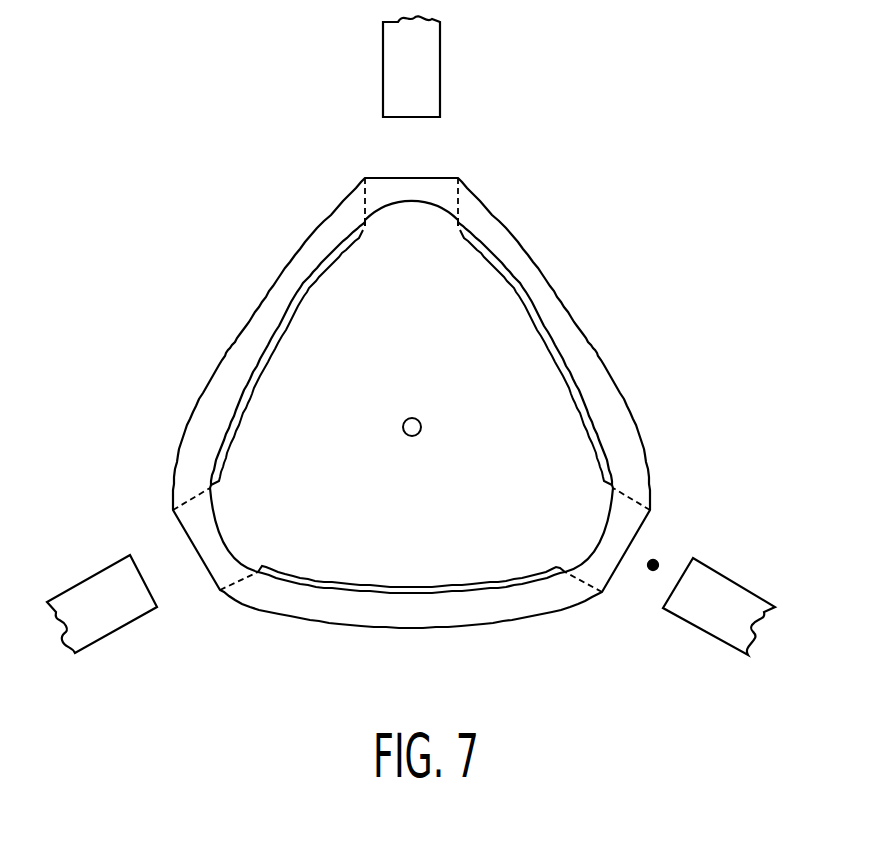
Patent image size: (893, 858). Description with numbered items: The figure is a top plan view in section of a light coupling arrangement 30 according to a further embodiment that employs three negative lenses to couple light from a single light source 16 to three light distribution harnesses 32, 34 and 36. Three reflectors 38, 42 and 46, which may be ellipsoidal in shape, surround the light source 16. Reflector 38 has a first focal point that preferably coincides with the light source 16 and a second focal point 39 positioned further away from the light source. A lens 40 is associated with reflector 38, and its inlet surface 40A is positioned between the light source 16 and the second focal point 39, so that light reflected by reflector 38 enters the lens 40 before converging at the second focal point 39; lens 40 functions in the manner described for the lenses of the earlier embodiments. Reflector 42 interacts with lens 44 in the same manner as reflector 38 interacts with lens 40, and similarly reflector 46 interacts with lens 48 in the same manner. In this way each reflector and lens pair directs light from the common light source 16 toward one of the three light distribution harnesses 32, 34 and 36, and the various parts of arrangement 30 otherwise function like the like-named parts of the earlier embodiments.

The arrangement 30 is at (191, 165).
The light source 16 is at (415, 417).
The light distribution harness 32 is at (432, 51).
The light distribution harness 34 is at (735, 582).
The light distribution harness 36 is at (112, 618).
The reflector 38 is at (267, 292).
The second focal point 39 is at (655, 558).
The lens 40 is at (612, 567).
The inlet surface 40A is at (608, 522).
The reflector 42 is at (540, 275).
The lens 44 is at (190, 552).
The reflector 46 is at (452, 613).
The lens 48 is at (430, 178).